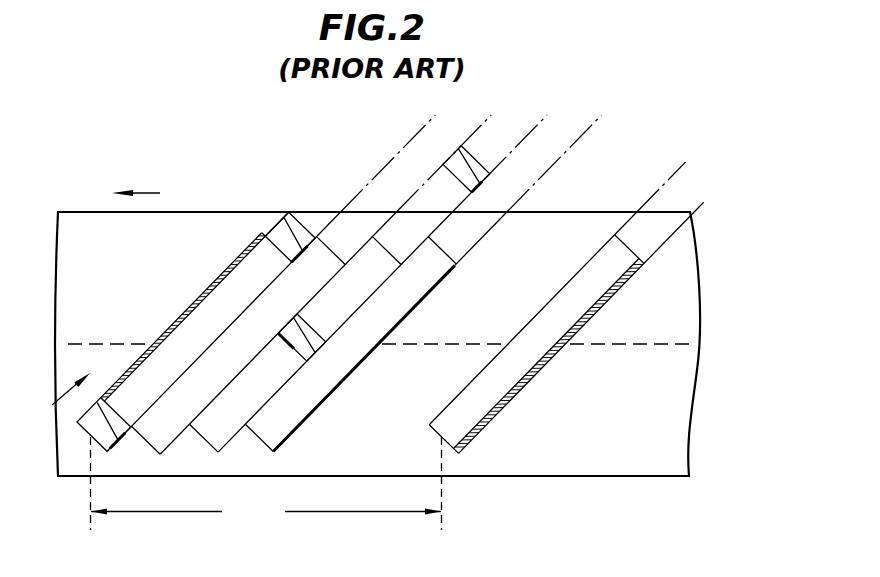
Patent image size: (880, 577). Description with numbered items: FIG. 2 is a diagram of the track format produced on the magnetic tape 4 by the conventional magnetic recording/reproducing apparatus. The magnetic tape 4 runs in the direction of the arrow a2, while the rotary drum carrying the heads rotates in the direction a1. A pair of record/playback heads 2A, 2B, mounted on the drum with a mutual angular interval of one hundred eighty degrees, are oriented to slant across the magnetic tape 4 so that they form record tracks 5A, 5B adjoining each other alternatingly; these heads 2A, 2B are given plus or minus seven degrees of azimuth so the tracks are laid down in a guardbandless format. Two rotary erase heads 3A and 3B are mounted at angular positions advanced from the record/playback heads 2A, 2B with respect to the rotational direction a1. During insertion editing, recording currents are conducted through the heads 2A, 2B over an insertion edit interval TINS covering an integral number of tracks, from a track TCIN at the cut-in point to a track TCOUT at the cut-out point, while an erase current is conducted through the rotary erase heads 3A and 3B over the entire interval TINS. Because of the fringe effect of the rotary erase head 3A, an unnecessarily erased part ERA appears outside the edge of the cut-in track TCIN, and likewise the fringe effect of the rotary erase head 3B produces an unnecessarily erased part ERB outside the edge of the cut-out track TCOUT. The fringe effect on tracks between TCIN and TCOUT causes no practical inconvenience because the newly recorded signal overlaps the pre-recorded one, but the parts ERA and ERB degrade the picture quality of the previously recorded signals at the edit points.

The record/playback head 2A is at (121, 435).
The record/playback head 2B is at (298, 230).
The rotary erase head 3A is at (310, 333).
The rotary erase head 3B is at (475, 168).
The magnetic tape 4 is at (562, 477).
The record track 5A is at (247, 265).
The record track 5B is at (330, 253).
The unnecessarily erased part ERA is at (178, 317).
The unnecessarily erased part ERB is at (543, 370).
The rotational direction a1 is at (58, 397).
The tape running direction a2 is at (143, 193).
The cut-in point track TCIN is at (92, 497).
The cut-out point track TCOUT is at (444, 497).
The insertion edit interval TINS is at (266, 514).